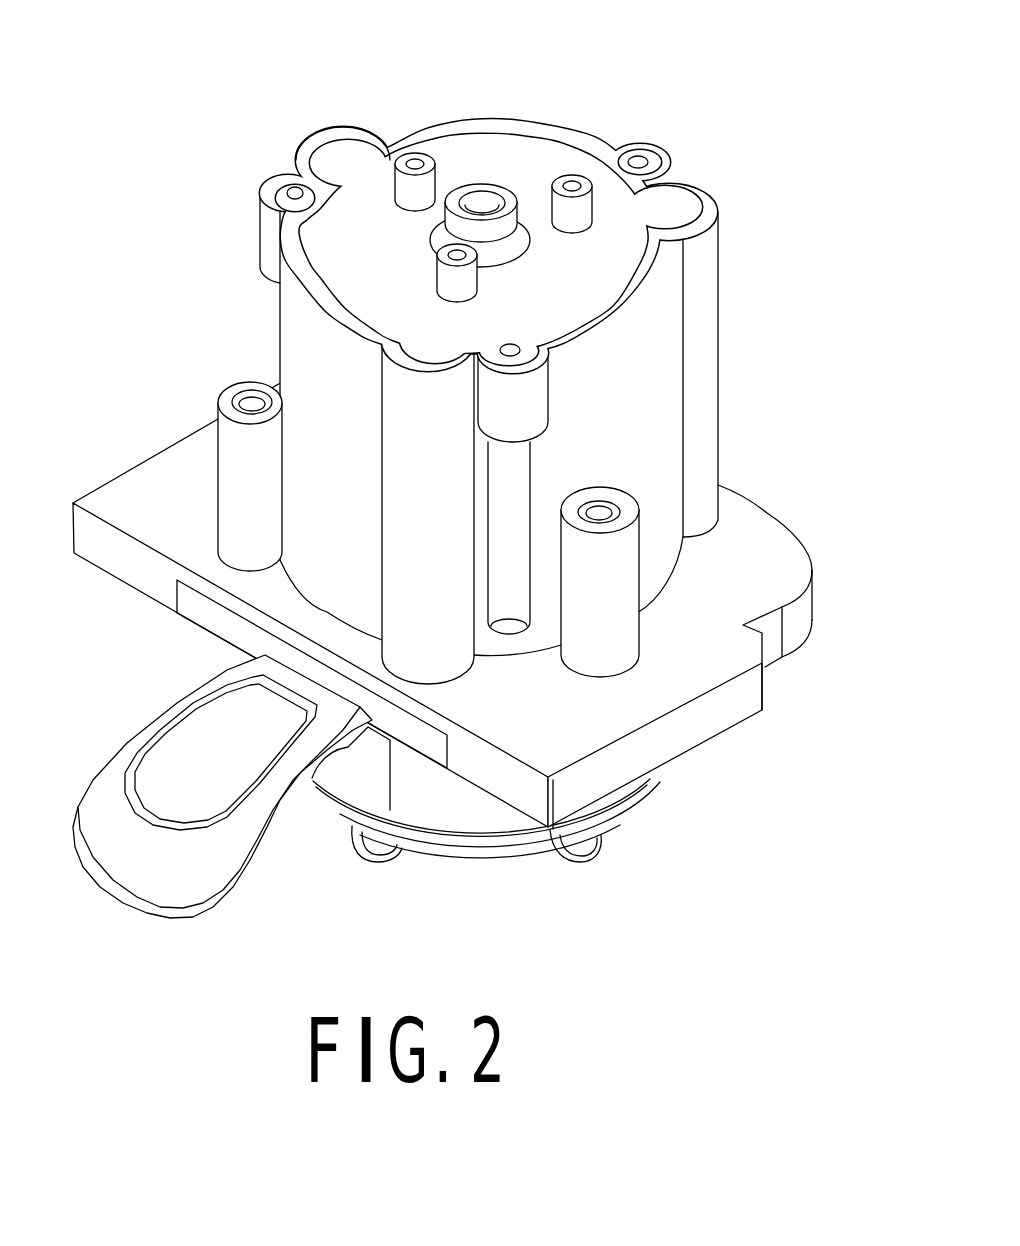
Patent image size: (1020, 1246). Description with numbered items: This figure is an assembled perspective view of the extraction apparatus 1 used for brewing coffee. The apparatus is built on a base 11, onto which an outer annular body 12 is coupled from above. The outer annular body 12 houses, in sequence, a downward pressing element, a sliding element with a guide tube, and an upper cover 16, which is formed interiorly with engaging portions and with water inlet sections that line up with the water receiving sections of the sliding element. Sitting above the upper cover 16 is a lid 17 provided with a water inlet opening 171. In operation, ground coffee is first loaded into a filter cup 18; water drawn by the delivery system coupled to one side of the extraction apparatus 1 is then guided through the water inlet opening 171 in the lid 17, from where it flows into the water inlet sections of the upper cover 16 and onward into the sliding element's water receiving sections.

The extraction apparatus 1 is at (493, 493).
The base 11 is at (700, 717).
The outer annular body 12 is at (302, 320).
The upper cover 16 is at (357, 171).
The lid 17 is at (538, 154).
The water inlet opening 171 is at (486, 200).
The filter cup 18 is at (415, 813).